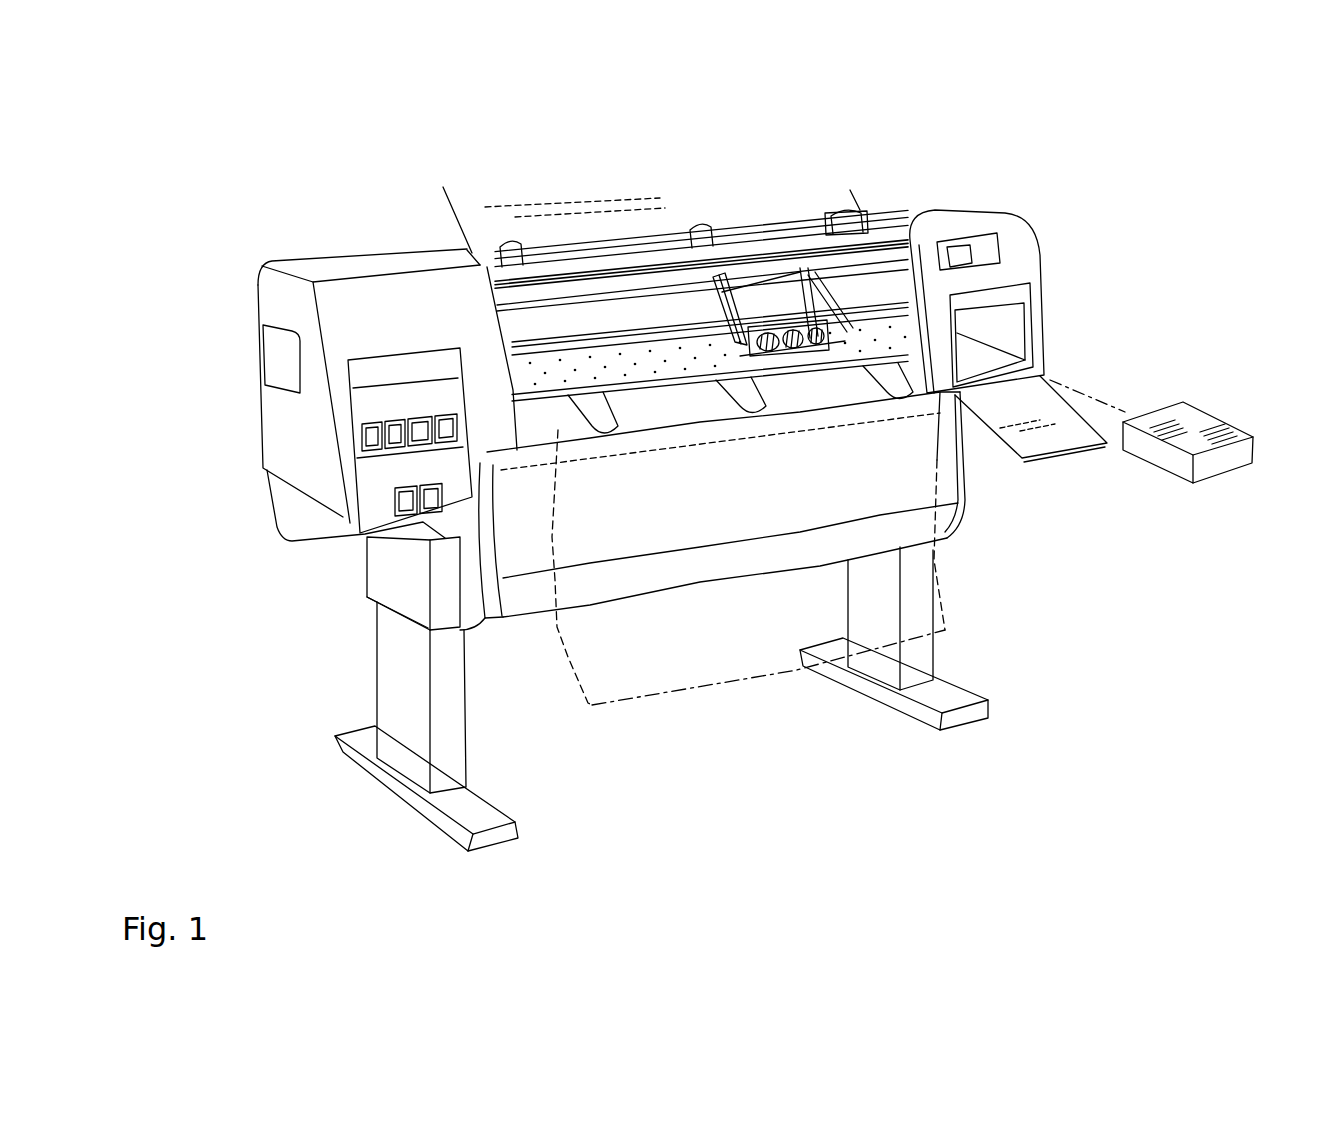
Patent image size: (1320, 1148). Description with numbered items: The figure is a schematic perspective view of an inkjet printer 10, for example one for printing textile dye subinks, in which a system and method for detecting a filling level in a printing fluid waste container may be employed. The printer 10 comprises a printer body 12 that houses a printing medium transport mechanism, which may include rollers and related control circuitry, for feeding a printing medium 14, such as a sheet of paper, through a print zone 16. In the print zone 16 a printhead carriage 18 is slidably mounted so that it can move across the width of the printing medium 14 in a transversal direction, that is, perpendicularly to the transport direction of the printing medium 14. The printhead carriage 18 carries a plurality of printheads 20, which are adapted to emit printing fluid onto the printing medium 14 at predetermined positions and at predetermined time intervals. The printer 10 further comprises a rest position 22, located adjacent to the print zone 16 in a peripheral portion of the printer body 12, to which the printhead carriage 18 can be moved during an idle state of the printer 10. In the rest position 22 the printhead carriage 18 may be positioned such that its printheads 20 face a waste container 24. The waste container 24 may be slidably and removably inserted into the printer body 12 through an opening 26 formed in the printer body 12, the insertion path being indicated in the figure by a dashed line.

The printer 10 is at (208, 108).
The printer body 12 is at (340, 265).
The printing medium 14 is at (940, 622).
The print zone 16 is at (898, 328).
The printhead carriage 18 is at (822, 308).
The printheads 20 is at (753, 308).
The rest position 22 is at (1012, 322).
The waste container 24 is at (1223, 418).
The opening 26 is at (1043, 347).